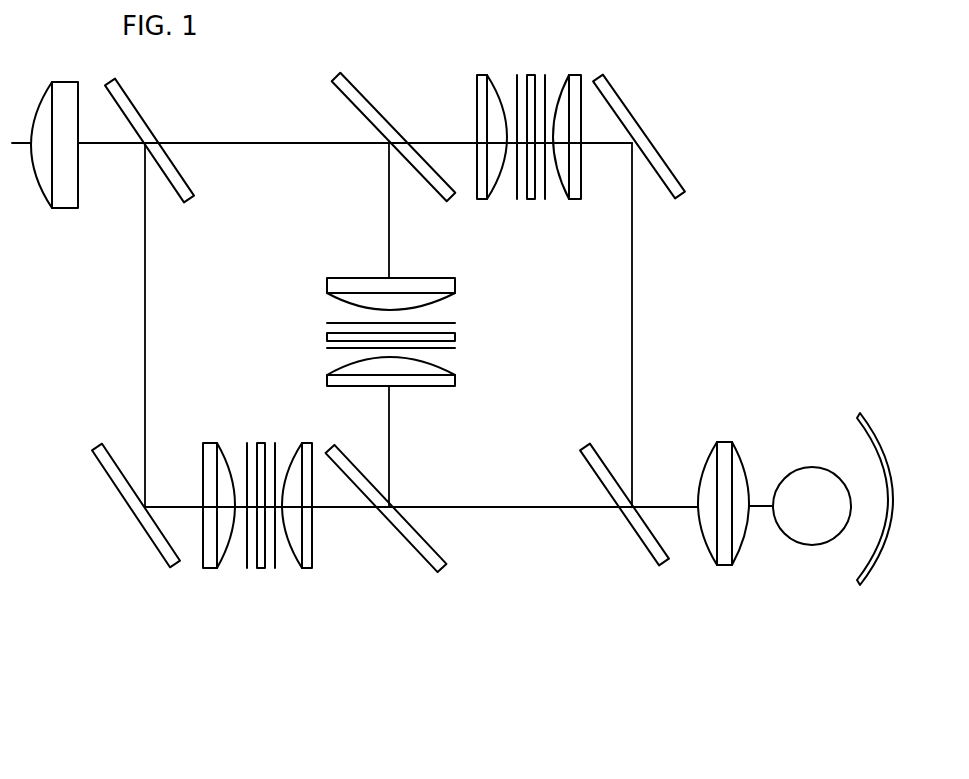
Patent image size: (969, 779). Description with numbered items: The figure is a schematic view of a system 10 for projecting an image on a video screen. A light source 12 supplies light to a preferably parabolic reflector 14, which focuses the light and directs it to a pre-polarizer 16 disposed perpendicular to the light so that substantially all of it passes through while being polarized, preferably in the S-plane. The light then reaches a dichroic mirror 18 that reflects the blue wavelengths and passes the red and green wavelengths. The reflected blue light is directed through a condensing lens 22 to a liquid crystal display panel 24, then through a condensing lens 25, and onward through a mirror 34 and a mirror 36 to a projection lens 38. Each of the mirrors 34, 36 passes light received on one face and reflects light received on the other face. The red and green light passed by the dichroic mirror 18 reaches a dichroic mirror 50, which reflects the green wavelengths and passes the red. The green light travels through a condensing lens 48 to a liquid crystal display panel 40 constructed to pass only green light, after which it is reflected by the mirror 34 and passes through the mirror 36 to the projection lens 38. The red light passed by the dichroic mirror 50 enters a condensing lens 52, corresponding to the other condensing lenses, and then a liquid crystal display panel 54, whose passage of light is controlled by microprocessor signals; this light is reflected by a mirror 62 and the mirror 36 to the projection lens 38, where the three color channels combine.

The system 10 is at (670, 268).
The light source 12 is at (805, 467).
The reflector 14 is at (857, 415).
The pre-polarizer 16 is at (724, 442).
The dichroic mirror 18 is at (645, 546).
The condensing lens 22 is at (576, 76).
The liquid crystal display panel 24 is at (536, 212).
The condensing lens 25 is at (476, 92).
The mirror 34 is at (345, 102).
The mirror 36 is at (138, 108).
The projection lens 38 is at (53, 210).
The liquid crystal display panel 40 is at (310, 338).
The condensing lens 48 is at (432, 386).
The dichroic mirror 50 is at (440, 553).
The condensing lens 52 is at (305, 570).
The liquid crystal display panel 54 is at (254, 588).
The mirror 62 is at (152, 540).